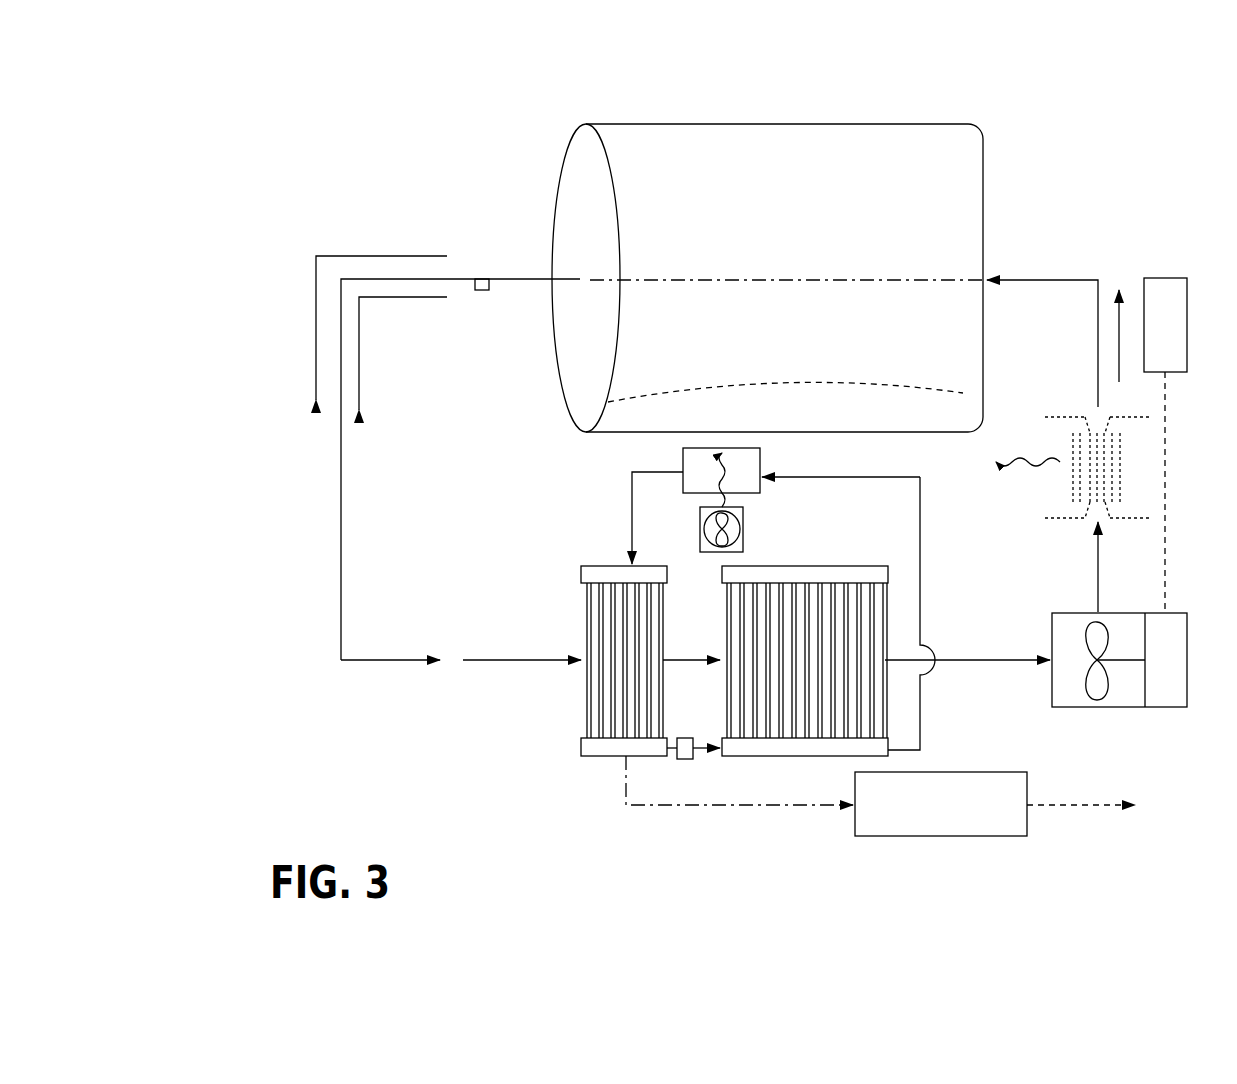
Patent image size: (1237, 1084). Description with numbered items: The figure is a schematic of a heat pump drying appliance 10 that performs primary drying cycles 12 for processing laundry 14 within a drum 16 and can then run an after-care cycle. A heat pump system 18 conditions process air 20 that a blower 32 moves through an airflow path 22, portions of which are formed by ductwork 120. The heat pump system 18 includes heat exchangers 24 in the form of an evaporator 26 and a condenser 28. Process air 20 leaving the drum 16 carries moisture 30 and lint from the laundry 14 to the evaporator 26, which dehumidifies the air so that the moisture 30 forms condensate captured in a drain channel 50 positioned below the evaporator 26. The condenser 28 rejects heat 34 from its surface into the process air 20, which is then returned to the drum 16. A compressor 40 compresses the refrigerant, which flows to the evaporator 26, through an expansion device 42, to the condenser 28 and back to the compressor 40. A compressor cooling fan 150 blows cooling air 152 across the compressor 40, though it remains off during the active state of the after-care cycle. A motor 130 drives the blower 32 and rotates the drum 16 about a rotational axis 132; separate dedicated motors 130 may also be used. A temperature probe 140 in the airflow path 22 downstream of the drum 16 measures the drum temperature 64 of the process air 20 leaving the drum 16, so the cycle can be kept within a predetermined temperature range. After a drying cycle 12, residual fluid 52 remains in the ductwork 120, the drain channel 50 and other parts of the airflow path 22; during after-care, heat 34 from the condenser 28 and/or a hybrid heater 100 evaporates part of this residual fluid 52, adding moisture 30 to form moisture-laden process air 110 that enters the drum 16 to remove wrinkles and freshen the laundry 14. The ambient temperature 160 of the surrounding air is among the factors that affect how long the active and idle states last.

The laundry appliance 10 is at (405, 203).
The primary drying cycle 12 is at (483, 740).
The laundry 14 is at (672, 413).
The drum 16 is at (716, 143).
The heat pump system 18 is at (597, 775).
The process air 20 is at (965, 662).
The airflow path 22 is at (1030, 280).
The heat exchangers 24 is at (570, 719).
The evaporator 26 is at (590, 608).
The condenser 28 is at (735, 603).
The moisture 30 is at (790, 383).
The blower 32 is at (1120, 695).
The heat 34 is at (907, 624).
The compressor 40 is at (683, 456).
The expansion device 42 is at (688, 757).
The drain channel 50 is at (930, 828).
The residual fluid 52 is at (357, 648).
The drum temperature 64 is at (523, 275).
The hybrid heater 100 is at (1048, 483).
The moisture-laden process air 110 is at (341, 553).
The ductwork 120 is at (496, 663).
The motor 130 is at (1167, 288).
The rotational axis 132 is at (948, 278).
The temperature probe 140 is at (479, 292).
The compressor cooling fan 150 is at (737, 527).
The cooling air 152 is at (725, 480).
The ambient temperature 160 is at (1080, 137).